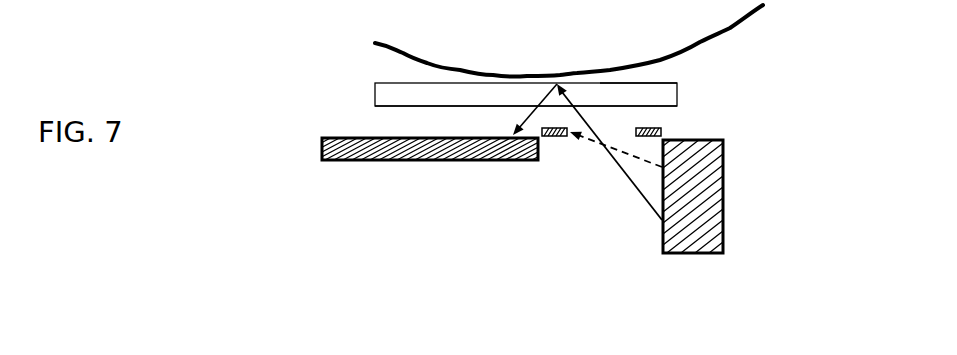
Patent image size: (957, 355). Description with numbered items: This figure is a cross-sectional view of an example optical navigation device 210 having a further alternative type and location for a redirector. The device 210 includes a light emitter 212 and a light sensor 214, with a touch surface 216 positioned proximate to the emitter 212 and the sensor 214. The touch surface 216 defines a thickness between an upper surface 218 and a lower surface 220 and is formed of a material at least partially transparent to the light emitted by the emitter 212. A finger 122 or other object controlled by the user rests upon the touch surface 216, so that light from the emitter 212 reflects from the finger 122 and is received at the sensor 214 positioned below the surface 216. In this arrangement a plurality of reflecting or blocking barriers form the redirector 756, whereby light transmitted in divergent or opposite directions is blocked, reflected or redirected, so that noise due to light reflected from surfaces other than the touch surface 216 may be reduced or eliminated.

The finger 122 is at (581, 42).
The optical navigation device 210 is at (362, 219).
The light emitter 212 is at (703, 203).
The light sensor 214 is at (448, 160).
The touch surface 216 is at (366, 95).
The upper surface 218 is at (655, 84).
The lower surface 220 is at (400, 107).
The redirector 756 is at (555, 150).